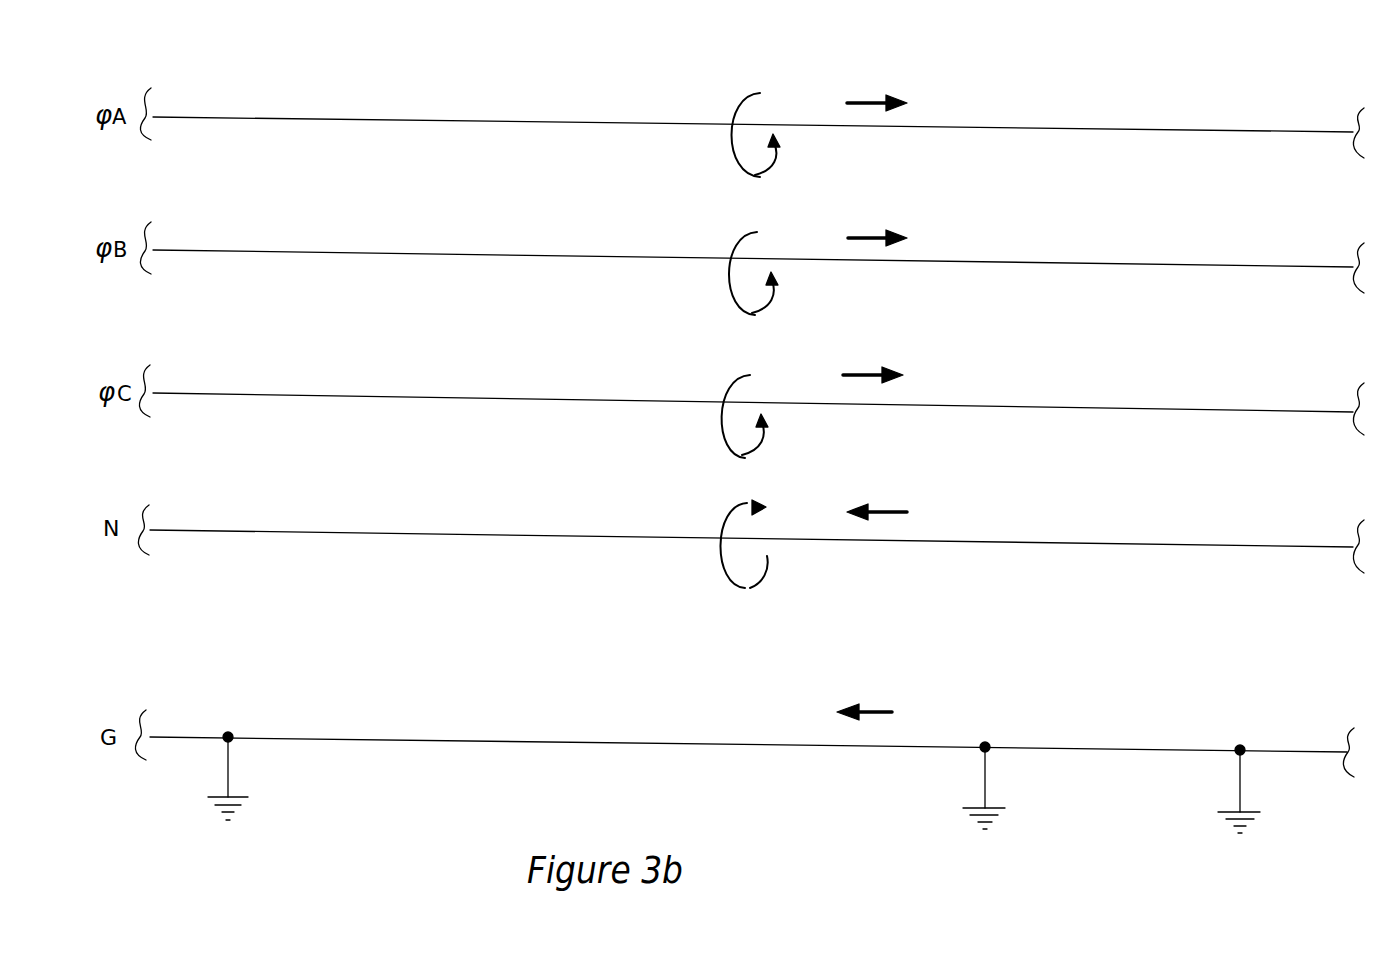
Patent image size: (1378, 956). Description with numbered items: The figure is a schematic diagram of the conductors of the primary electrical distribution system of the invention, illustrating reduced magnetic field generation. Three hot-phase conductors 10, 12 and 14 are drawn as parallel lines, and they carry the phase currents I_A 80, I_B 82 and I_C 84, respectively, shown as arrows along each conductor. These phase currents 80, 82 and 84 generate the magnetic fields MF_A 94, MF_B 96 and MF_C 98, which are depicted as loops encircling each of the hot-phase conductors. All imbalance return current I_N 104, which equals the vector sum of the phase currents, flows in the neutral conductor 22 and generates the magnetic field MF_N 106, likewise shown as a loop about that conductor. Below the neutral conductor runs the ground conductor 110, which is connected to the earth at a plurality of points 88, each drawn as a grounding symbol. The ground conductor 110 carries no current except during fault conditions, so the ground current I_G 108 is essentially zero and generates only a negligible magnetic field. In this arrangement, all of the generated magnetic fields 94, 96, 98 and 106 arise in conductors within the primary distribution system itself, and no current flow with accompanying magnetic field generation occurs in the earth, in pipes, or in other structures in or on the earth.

The hot-phase conductor 10 is at (1055, 128).
The hot-phase conductor 12 is at (1082, 265).
The hot-phase conductor 14 is at (1092, 407).
The neutral conductor 22 is at (1078, 543).
The phase current I_A 80 is at (868, 101).
The phase current I_B 82 is at (868, 236).
The phase current I_C 84 is at (864, 372).
The earth connection points 88 is at (229, 767).
The magnetic field MF_A 94 is at (736, 113).
The magnetic field MF_B 96 is at (732, 252).
The magnetic field MF_C 98 is at (727, 398).
The imbalance return current I_N 104 is at (880, 509).
The magnetic field MF_N 106 is at (753, 589).
The ground current I_G 108 is at (868, 709).
The ground conductor 110 is at (1138, 750).